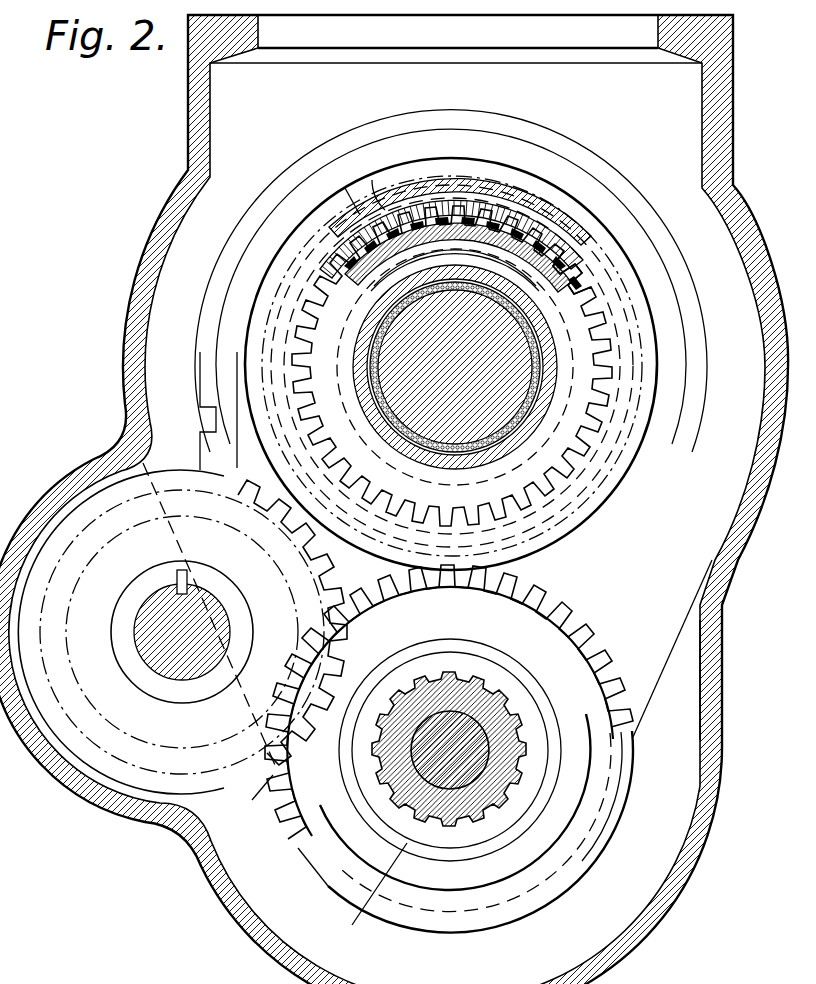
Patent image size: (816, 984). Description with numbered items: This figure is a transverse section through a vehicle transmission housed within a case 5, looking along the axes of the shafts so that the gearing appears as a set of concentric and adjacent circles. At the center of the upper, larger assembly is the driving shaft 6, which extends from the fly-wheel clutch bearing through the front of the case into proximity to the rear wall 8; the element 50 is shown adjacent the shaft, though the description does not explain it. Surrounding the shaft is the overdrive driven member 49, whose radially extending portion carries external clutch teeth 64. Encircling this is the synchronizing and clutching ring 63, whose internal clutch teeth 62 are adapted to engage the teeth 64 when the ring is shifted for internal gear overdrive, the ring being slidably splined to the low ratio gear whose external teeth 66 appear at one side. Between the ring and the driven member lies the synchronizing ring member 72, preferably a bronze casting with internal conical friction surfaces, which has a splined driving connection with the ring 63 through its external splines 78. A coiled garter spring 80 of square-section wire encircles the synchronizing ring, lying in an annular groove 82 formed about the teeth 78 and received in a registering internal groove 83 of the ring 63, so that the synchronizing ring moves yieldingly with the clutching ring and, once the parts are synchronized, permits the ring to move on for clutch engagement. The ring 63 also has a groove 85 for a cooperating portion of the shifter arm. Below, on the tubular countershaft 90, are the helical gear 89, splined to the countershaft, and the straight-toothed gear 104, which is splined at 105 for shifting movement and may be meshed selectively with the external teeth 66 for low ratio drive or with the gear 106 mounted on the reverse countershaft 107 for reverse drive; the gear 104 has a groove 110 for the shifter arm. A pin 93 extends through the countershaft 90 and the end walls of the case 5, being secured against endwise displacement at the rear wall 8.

The case 5 is at (250, 920).
The driving shaft 6 is at (500, 413).
The rear wall 8 is at (637, 700).
The overdrive driven member 49 is at (473, 462).
The shaft 50 is at (548, 376).
The internal clutch teeth 62 is at (576, 262).
The synchronizing and clutching ring 63 is at (600, 207).
The external clutch teeth 64 is at (318, 283).
The external teeth 66 is at (210, 440).
The synchronizing ring member 72 is at (518, 240).
The external splines 78 is at (453, 200).
The coiled garter spring 80 is at (363, 186).
The annular groove 82 is at (488, 213).
The internal groove 83 is at (520, 207).
The groove 85 is at (400, 128).
The gear 89 is at (307, 867).
The countershaft 90 is at (472, 800).
The pin 93 is at (450, 776).
The gear 104 is at (277, 817).
The splines 105 is at (452, 672).
The gear 106 is at (270, 790).
The countershaft 107 is at (155, 655).
The groove 110 is at (368, 896).